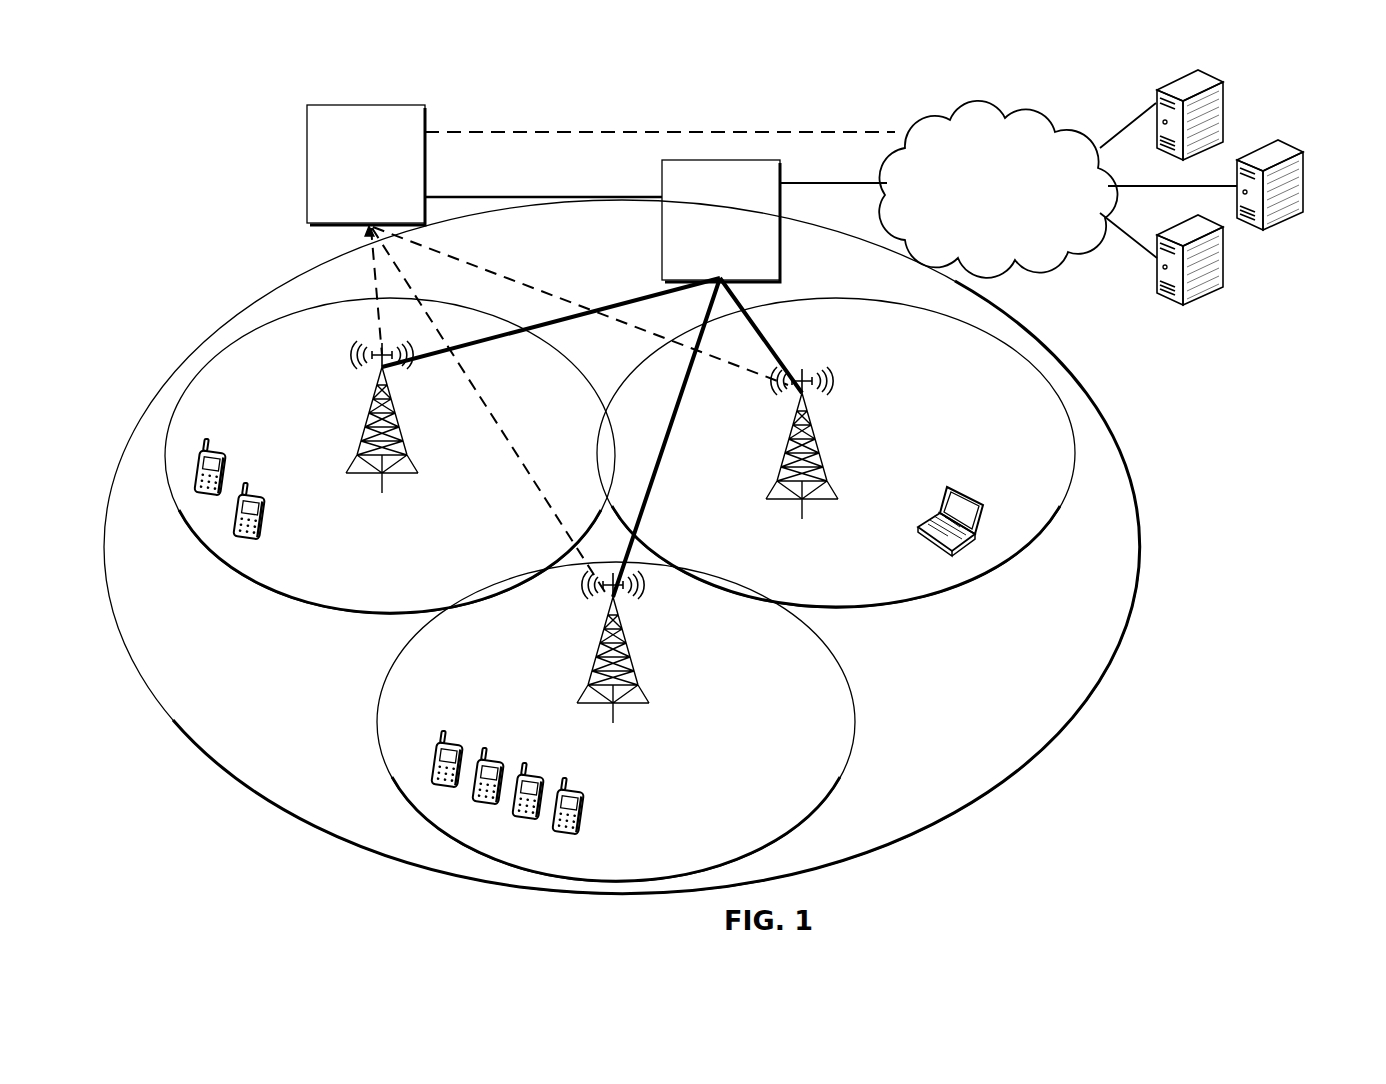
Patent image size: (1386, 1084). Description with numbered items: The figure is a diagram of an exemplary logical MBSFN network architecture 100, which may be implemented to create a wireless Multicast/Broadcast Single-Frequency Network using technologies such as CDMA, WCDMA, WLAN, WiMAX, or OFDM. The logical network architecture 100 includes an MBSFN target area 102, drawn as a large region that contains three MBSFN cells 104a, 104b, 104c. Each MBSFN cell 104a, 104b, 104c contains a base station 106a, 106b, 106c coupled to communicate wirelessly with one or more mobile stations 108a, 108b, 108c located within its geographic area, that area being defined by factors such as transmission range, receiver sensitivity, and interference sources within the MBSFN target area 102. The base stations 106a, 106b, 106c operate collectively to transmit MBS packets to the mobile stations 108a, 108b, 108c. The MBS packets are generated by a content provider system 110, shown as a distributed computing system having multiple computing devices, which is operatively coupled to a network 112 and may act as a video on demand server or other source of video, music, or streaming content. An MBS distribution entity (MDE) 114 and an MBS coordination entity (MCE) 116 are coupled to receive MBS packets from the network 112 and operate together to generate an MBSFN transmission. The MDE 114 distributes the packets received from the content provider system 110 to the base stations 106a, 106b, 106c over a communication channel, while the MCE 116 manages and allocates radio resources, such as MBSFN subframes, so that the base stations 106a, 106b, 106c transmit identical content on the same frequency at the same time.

The logical MBSFN network architecture 100 is at (172, 110).
The MBSFN target area 102 is at (291, 774).
The MBSFN cell 104a is at (429, 596).
The MBSFN cell 104b is at (826, 596).
The MBSFN cell 104c is at (622, 866).
The base station 106a is at (370, 392).
The base station 106b is at (814, 420).
The base station 106c is at (598, 622).
The mobile station 108a is at (226, 449).
The mobile station 108b is at (975, 494).
The mobile station 108c is at (462, 737).
The content provider system 110 is at (1233, 103).
The network 112 is at (978, 238).
The MBS distribution entity (MDE) 114 is at (705, 271).
The MBS coordination entity (MCE) 116 is at (351, 206).